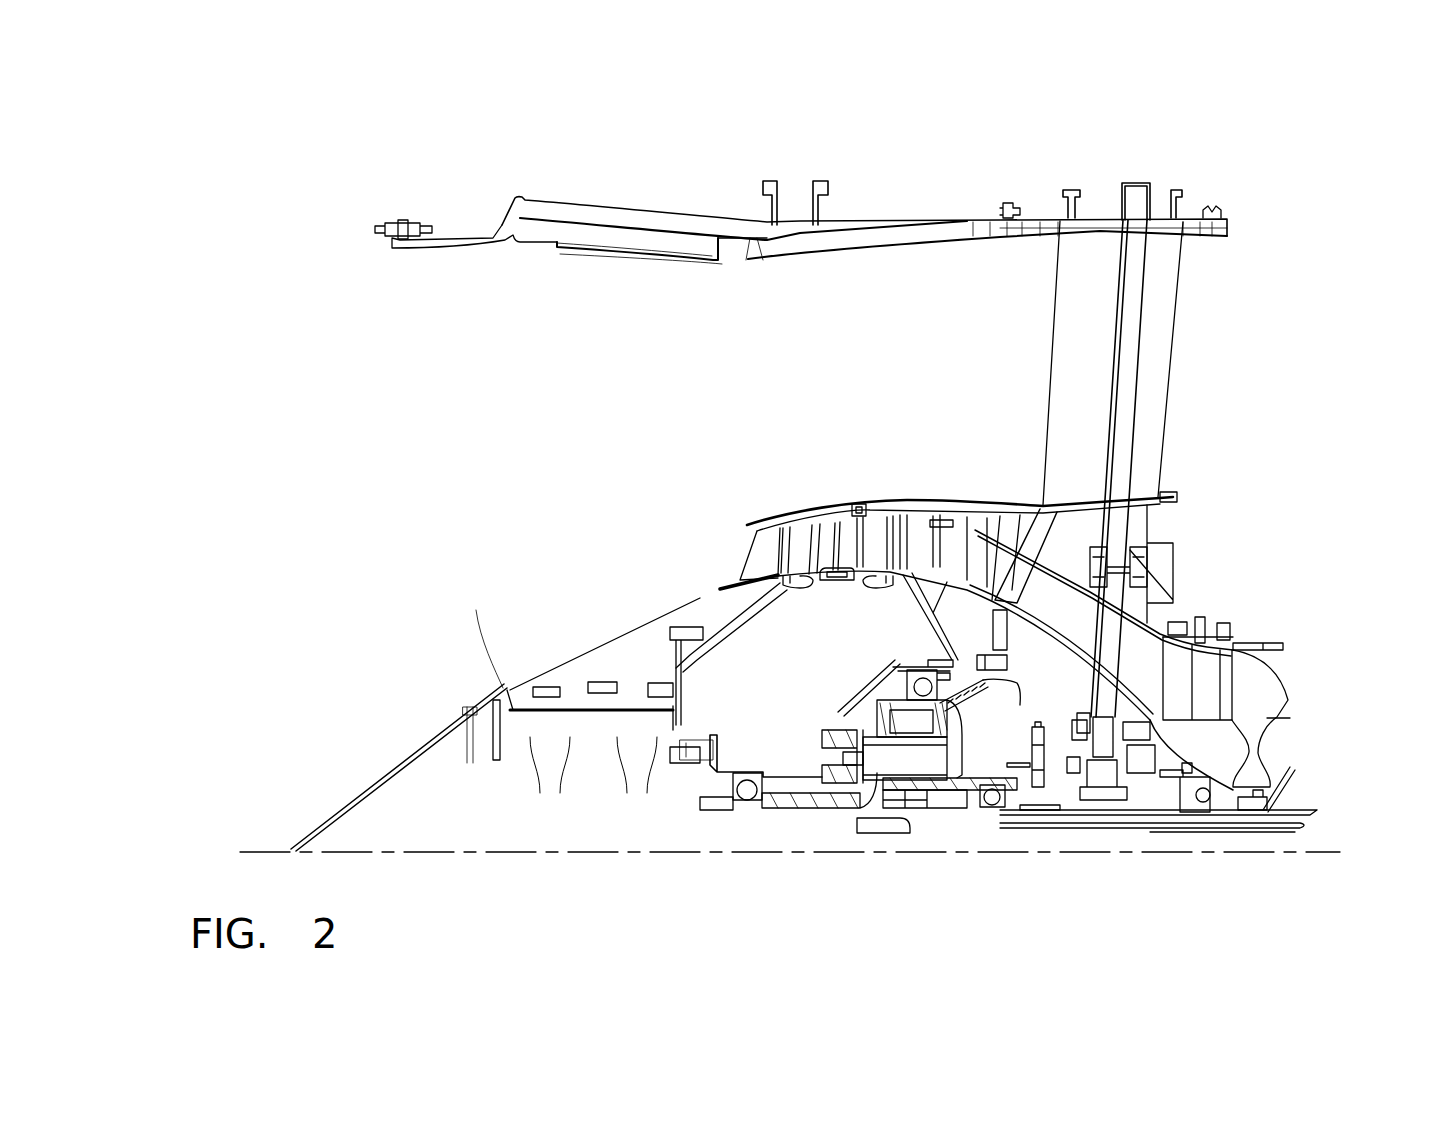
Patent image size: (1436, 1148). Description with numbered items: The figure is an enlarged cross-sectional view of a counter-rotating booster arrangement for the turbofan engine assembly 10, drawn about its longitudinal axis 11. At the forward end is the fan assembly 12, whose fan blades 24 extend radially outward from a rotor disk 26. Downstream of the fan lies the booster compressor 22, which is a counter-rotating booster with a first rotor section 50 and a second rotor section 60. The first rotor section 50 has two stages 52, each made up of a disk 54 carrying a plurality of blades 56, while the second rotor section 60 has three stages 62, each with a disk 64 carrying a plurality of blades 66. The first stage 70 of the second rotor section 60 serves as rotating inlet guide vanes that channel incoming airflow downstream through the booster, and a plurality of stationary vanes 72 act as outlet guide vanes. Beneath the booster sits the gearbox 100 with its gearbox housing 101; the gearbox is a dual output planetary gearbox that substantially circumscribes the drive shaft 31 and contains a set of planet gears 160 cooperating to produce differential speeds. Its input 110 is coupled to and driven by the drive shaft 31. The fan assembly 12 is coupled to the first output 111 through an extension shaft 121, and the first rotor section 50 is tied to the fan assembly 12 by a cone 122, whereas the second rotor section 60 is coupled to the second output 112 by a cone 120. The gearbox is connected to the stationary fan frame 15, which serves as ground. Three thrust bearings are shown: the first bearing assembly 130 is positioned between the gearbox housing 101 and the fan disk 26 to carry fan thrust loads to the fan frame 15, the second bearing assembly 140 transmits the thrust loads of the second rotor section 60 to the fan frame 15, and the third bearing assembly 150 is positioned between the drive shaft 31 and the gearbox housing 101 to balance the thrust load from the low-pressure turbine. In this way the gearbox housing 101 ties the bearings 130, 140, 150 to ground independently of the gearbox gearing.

The turbofan engine assembly 10 is at (1285, 143).
The longitudinal axis 11 is at (262, 853).
The fan assembly 12 is at (449, 469).
The fan frame 15 is at (1027, 623).
The booster compressor 22 is at (908, 400).
The fan blades 24 is at (607, 491).
The rotor disk 26 is at (550, 790).
The drive shaft 31 is at (1193, 833).
The first rotor section 50 is at (845, 582).
The stages 52 is at (798, 506).
The disk 54 is at (797, 583).
The blades 56 is at (810, 560).
The second rotor section 60 is at (932, 509).
The stages 62 is at (772, 537).
The disk 64 is at (813, 545).
The blades 66 is at (755, 568).
The first stage 70 is at (757, 557).
The stationary vanes 72 is at (1043, 545).
The gearbox 100 is at (965, 740).
The gearbox housing 101 is at (975, 702).
The input 110 is at (920, 800).
The first output 111 is at (840, 780).
The second output 112 is at (825, 752).
The cone 120 is at (912, 662).
The extension shaft 121 is at (737, 775).
The cone 122 is at (697, 655).
The first bearing assembly 130 is at (728, 812).
The second bearing assembly 140 is at (902, 686).
The third bearing assembly 150 is at (1003, 820).
The planet gears 160 is at (913, 760).